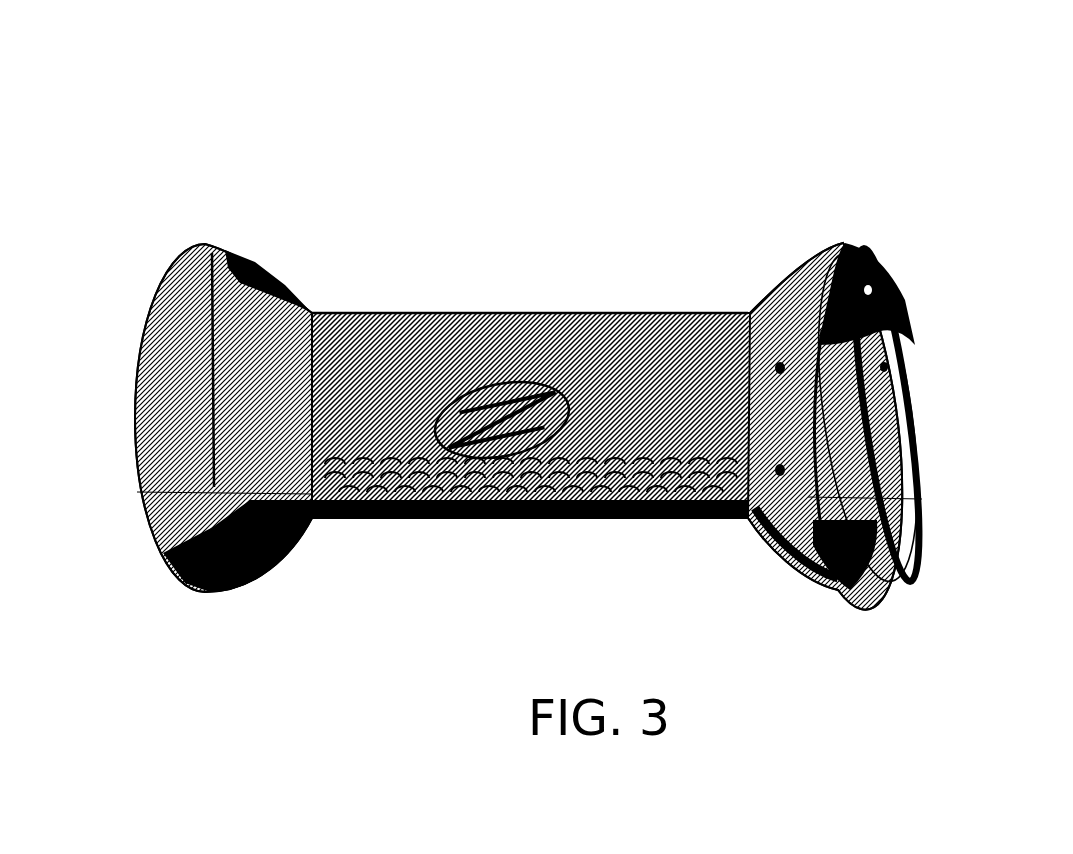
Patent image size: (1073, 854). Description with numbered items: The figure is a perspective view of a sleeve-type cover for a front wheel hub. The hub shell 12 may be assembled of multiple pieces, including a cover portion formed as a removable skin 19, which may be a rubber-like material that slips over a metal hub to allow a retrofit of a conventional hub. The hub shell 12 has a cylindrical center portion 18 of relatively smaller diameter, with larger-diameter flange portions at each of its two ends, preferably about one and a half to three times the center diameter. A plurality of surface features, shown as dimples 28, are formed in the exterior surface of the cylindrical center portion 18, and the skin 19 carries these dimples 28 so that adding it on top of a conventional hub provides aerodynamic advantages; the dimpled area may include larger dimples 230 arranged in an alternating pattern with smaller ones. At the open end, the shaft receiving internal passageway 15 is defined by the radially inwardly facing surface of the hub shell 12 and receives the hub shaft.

The hub shell 12 is at (518, 158).
The removable skin 19 is at (299, 297).
The dimples 28 is at (540, 313).
The larger dimples 230 is at (370, 520).
The cylindrical center portion 18 is at (460, 520).
The shaft receiving internal passageway 15 is at (812, 410).